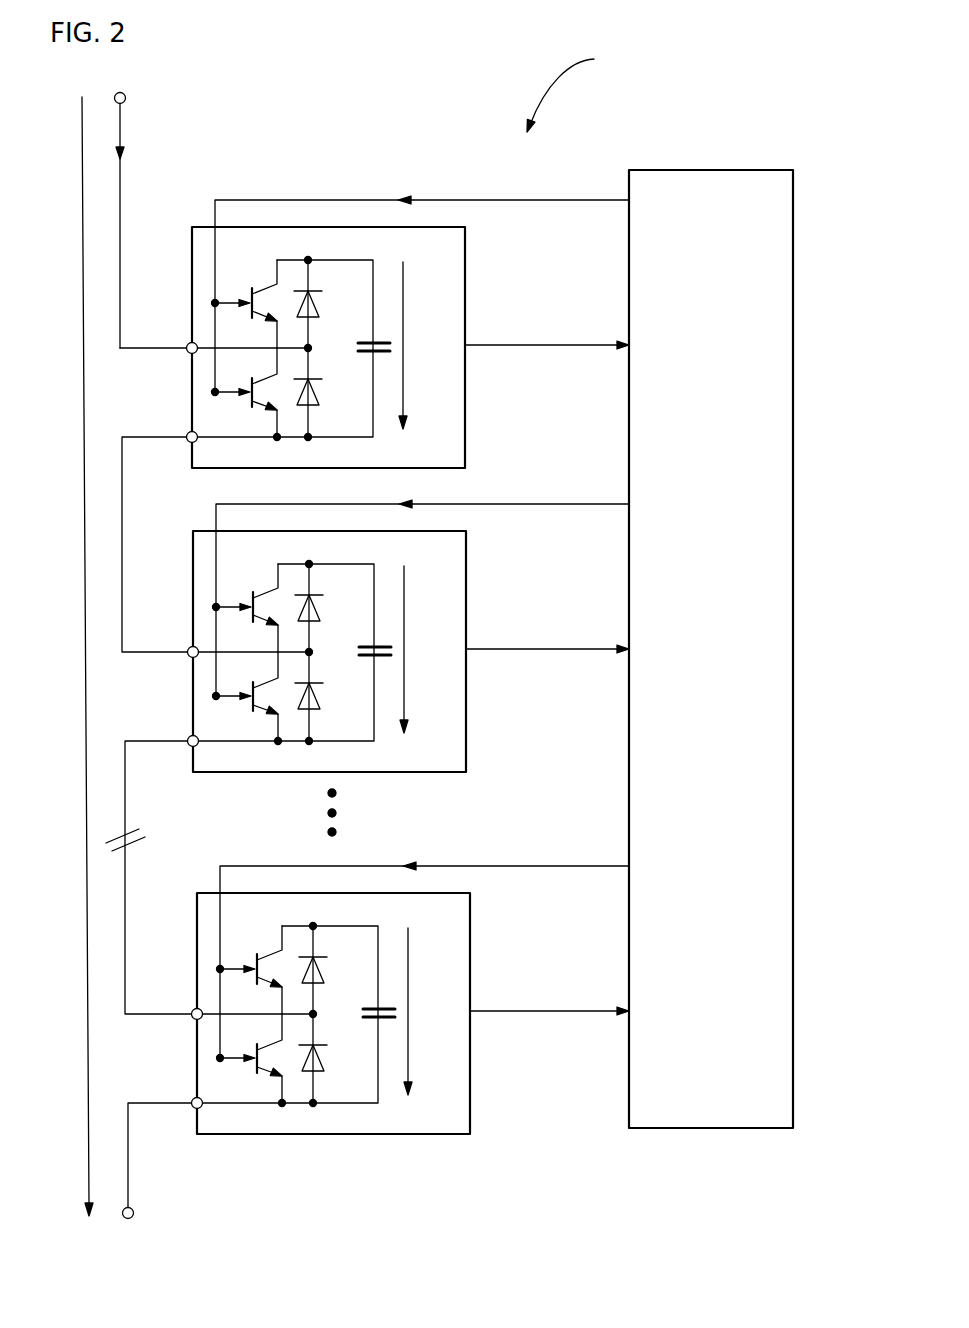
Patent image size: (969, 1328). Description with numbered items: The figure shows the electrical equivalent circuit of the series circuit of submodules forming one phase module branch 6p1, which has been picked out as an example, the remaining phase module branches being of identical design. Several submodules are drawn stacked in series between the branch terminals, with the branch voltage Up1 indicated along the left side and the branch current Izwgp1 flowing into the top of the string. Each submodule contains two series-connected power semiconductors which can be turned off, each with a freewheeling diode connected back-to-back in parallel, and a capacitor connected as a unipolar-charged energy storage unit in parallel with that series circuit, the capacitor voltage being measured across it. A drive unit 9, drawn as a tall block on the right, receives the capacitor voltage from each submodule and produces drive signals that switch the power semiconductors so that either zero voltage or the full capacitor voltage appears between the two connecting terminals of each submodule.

The phase module branch 6p1 is at (581, 88).
The drive unit 9 is at (719, 664).
The phase module voltage Up1 is at (80, 648).
The phase module current Izwgp1 is at (125, 153).